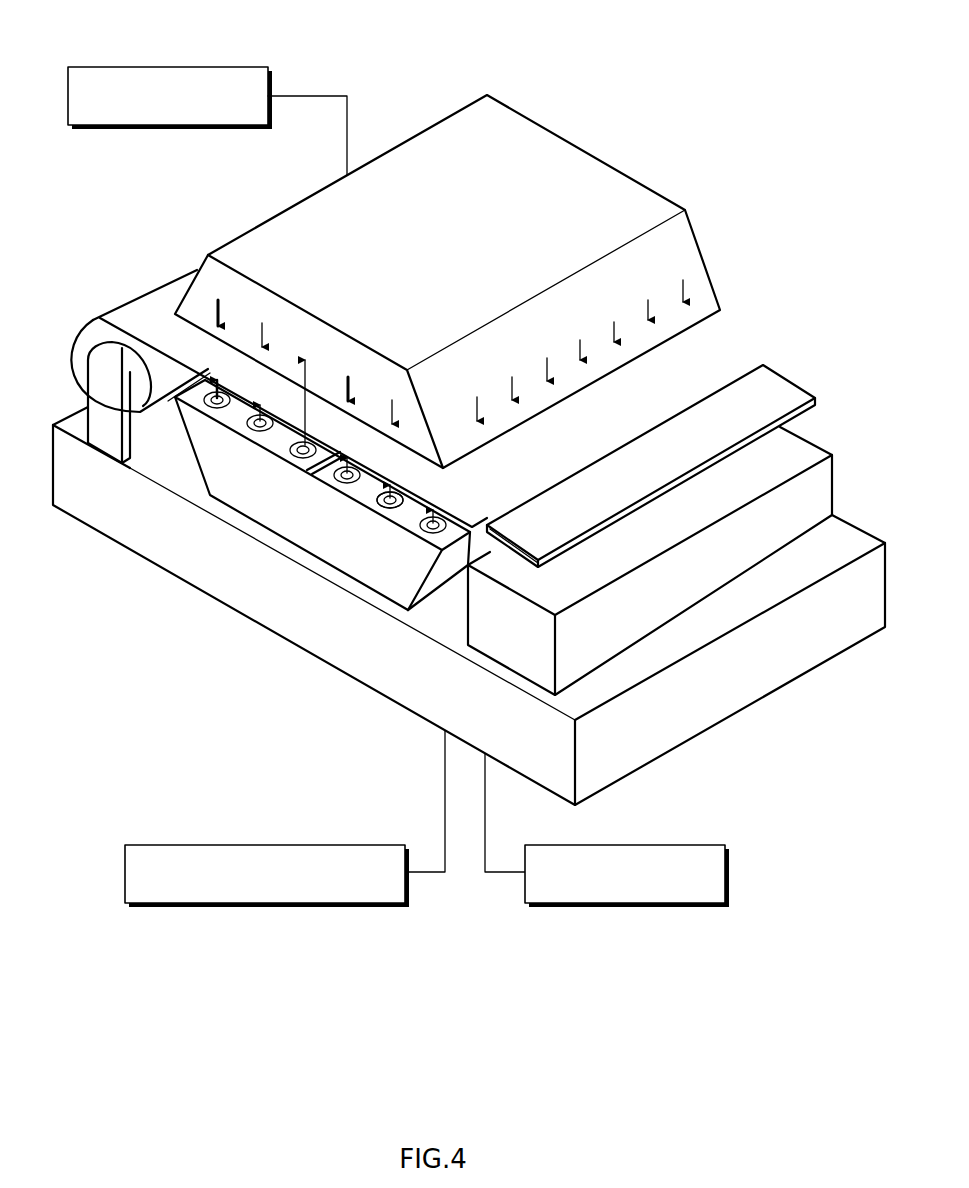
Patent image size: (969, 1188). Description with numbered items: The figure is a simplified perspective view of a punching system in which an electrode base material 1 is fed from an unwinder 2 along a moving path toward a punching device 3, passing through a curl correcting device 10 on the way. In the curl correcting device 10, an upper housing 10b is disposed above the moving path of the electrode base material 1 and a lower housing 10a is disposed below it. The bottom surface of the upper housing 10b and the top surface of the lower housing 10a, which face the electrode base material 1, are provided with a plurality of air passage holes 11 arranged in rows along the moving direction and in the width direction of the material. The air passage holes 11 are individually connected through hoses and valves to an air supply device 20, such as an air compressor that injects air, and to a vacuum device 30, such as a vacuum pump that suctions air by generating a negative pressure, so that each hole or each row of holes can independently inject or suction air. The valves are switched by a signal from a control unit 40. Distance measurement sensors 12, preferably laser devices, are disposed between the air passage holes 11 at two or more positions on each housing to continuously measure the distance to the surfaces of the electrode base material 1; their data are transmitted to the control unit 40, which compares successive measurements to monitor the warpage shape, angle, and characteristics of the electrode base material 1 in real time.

The electrode base material 1 is at (150, 312).
The unwinder 2 is at (100, 370).
The punching device 3 is at (776, 390).
The curl correcting device 10 is at (398, 389).
The lower housing 10a is at (250, 492).
The upper housing 10b is at (452, 138).
The air passage holes 11 is at (388, 502).
The distance measurement sensors 12 is at (177, 400).
The air supply device 20 is at (263, 908).
The vacuum device 30 is at (623, 908).
The control unit 40 is at (166, 67).